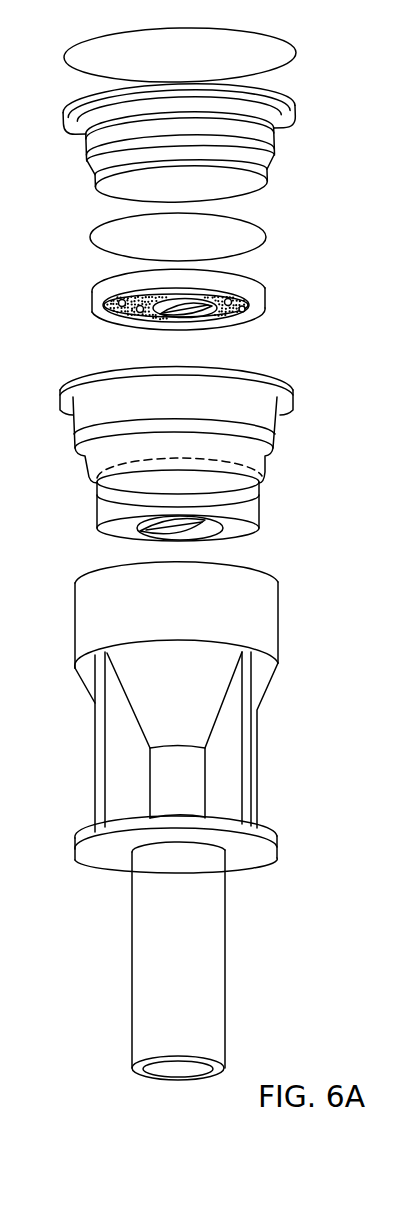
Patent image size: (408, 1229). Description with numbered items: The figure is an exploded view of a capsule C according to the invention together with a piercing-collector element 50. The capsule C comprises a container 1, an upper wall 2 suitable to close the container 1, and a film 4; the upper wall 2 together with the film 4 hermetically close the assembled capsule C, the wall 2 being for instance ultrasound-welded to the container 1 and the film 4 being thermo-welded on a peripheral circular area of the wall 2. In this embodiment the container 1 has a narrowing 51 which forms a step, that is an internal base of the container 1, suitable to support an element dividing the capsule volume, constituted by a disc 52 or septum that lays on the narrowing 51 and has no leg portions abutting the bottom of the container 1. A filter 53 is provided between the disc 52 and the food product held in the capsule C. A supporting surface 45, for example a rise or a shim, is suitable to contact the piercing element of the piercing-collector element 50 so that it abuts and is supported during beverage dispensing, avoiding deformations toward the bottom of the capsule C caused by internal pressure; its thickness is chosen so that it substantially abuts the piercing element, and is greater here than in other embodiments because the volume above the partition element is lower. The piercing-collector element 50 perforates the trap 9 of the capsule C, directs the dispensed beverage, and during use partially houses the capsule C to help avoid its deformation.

The capsule C is at (318, 40).
The film 4 is at (266, 33).
The upper wall 2 is at (283, 100).
The filter 53 is at (112, 235).
The disc 52 is at (244, 357).
The supporting surface 45 is at (214, 344).
The container 1 is at (183, 463).
The narrowing 51 is at (97, 484).
The trap 9 is at (212, 529).
The piercing-collector element 50 is at (269, 615).